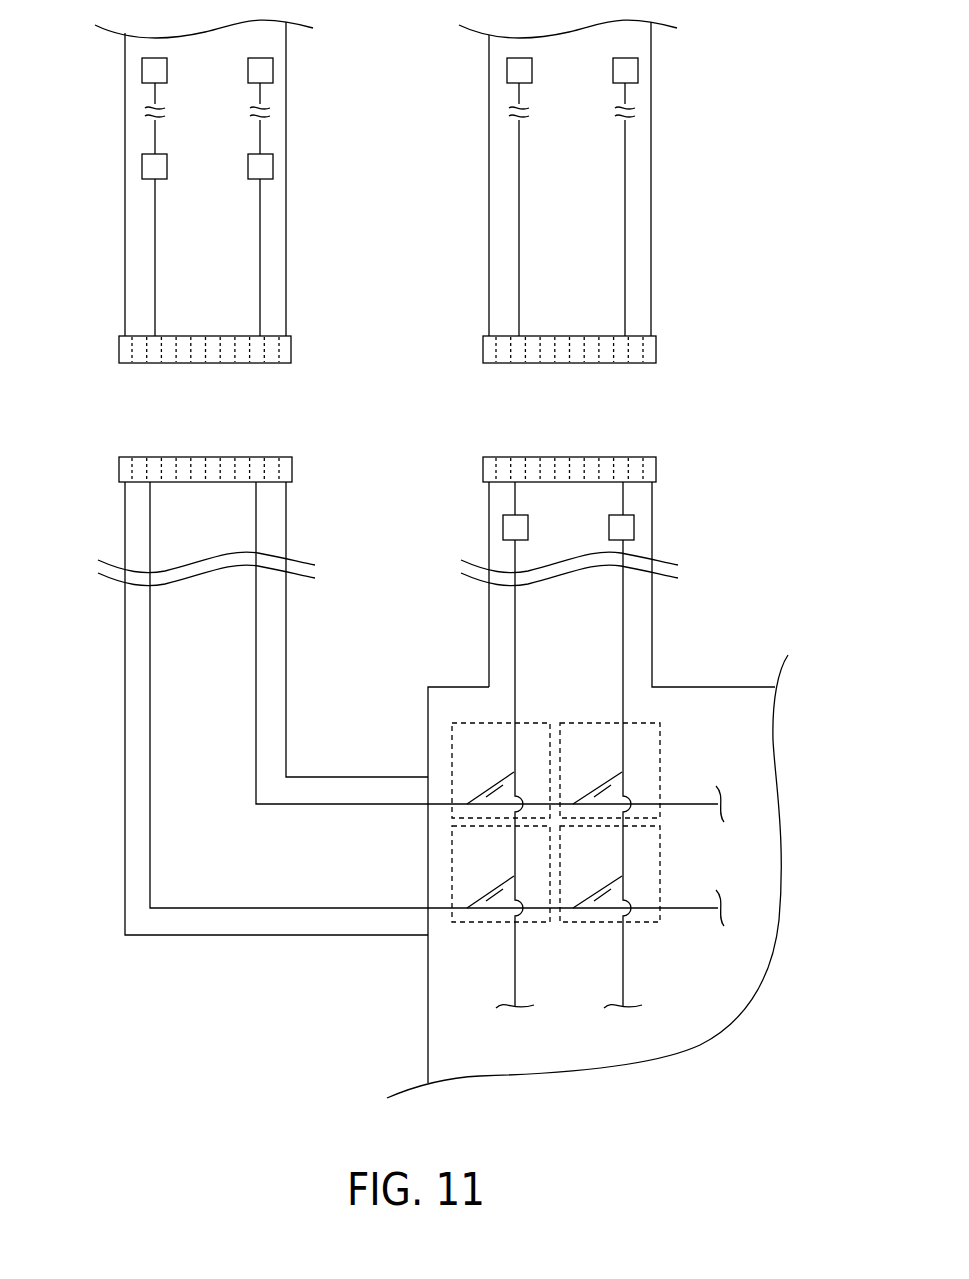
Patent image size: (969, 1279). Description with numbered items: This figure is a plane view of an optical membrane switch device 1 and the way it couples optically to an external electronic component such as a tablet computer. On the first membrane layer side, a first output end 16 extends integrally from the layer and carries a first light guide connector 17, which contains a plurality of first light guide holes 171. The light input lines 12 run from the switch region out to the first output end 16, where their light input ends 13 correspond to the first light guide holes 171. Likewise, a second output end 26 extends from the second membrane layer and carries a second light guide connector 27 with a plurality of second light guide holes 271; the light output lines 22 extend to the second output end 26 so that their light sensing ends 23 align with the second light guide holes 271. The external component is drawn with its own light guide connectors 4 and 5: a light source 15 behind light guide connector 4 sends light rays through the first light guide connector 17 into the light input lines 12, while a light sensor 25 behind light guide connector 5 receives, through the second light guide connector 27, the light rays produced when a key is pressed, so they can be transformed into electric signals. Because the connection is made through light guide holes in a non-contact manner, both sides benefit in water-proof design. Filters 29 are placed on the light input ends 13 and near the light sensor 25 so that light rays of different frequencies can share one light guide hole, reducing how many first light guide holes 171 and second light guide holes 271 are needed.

The optical membrane switch device 1 is at (420, 685).
The light guide connector 4 is at (656, 350).
The light guide connector 5 is at (291, 350).
The light input line 12 is at (515, 612).
The light input end 13 is at (515, 498).
The light source 15 is at (507, 70).
The first output end 16 is at (652, 643).
The first light guide connector 17 is at (656, 467).
The first light guide hole 171 is at (638, 466).
The light output line 22 is at (150, 620).
The light sensing end 23 is at (150, 517).
The light sensor 25 is at (142, 70).
The second output end 26 is at (125, 722).
The second light guide connector 27 is at (119, 467).
The second light guide hole 271 is at (257, 466).
The filter 29 is at (142, 165).